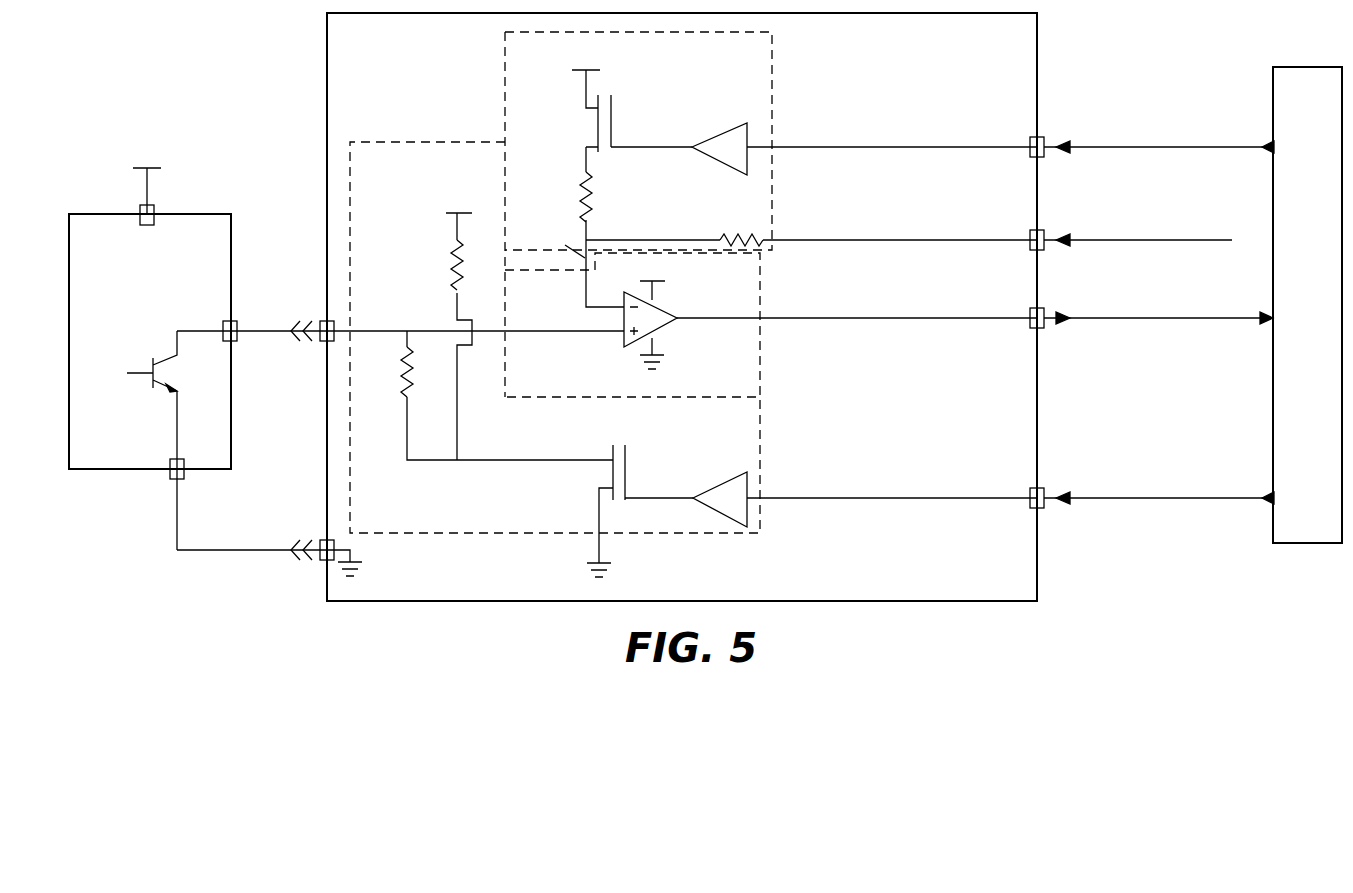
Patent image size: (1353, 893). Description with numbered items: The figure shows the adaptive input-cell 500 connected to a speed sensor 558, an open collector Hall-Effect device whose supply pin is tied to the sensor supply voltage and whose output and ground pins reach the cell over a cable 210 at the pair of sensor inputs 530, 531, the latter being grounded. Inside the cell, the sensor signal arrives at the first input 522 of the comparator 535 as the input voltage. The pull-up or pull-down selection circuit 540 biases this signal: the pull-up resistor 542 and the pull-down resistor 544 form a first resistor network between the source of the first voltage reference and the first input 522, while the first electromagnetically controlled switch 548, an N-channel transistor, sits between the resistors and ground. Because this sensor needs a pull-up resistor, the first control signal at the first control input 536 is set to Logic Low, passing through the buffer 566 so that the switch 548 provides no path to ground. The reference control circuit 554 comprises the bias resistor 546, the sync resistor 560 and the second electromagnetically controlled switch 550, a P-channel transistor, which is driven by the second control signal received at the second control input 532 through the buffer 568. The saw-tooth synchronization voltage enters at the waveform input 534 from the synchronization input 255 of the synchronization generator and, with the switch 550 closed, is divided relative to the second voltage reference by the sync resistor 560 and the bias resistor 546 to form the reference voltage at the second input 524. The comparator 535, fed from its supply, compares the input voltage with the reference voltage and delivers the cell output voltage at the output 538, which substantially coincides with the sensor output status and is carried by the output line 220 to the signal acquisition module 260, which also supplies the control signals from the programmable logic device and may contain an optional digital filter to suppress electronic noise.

The adaptive input-cell 500 is at (1066, 611).
The speed sensor 558 is at (188, 213).
The sensor cable 210 is at (296, 339).
The sensor input 530 is at (324, 318).
The sensor input 531 is at (326, 565).
The reference control circuit 554 is at (780, 97).
The first input 522 is at (590, 332).
The selection circuit 540 is at (530, 540).
The resistor Ru 542 is at (452, 272).
The resistor Rd 544 is at (405, 378).
The second input 524 is at (586, 306).
The resistor Rb 546 is at (583, 195).
The second electromagnetically controlled switch 550 is at (652, 90).
The buffer 568 is at (707, 135).
The resistor Rs 560 is at (727, 222).
The comparator 535 is at (668, 325).
The first electromagnetically controlled switch 548 is at (630, 485).
The buffer 566 is at (712, 513).
The second control input 532 is at (1044, 137).
The waveform input 534 is at (1044, 230).
The output 538 is at (1044, 308).
The first control input 536 is at (1044, 488).
The synchronization input 255 is at (1208, 244).
The cell voltage output line 220 is at (1210, 322).
The signal acquisition module 260 is at (1270, 84).